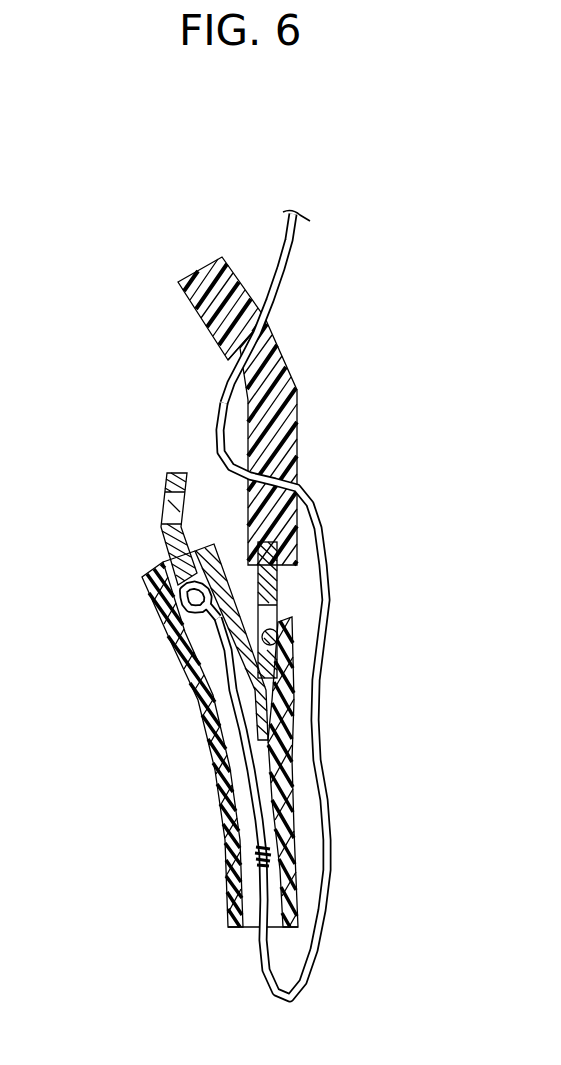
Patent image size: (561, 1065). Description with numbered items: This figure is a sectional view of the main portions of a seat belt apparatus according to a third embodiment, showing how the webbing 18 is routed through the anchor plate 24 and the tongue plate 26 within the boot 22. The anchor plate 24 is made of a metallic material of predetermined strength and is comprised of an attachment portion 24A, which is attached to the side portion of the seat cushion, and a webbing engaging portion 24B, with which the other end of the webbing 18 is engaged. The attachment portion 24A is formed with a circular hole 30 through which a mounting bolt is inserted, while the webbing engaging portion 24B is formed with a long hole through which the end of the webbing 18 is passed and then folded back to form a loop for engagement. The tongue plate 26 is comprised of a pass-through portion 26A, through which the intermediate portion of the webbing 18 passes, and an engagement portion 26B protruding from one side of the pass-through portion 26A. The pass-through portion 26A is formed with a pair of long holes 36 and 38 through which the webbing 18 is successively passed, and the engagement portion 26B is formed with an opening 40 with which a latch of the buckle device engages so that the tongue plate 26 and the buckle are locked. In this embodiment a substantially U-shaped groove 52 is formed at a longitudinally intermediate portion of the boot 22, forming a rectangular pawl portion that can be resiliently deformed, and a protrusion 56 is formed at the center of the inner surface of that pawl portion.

The webbing 18 is at (298, 242).
The boot 22 is at (220, 774).
The anchor plate 24 is at (181, 461).
The attachment portion 24A is at (167, 475).
The webbing engaging portion 24B is at (170, 553).
The tongue plate 26 is at (308, 395).
The pass-through portion 26A is at (213, 318).
The engagement portion 26B is at (278, 575).
The circular hole 30 is at (163, 495).
The long hole 36 is at (268, 332).
The long hole 38 is at (297, 480).
The opening 40 is at (278, 607).
The groove 52 is at (243, 573).
The protrusion 56 is at (265, 637).